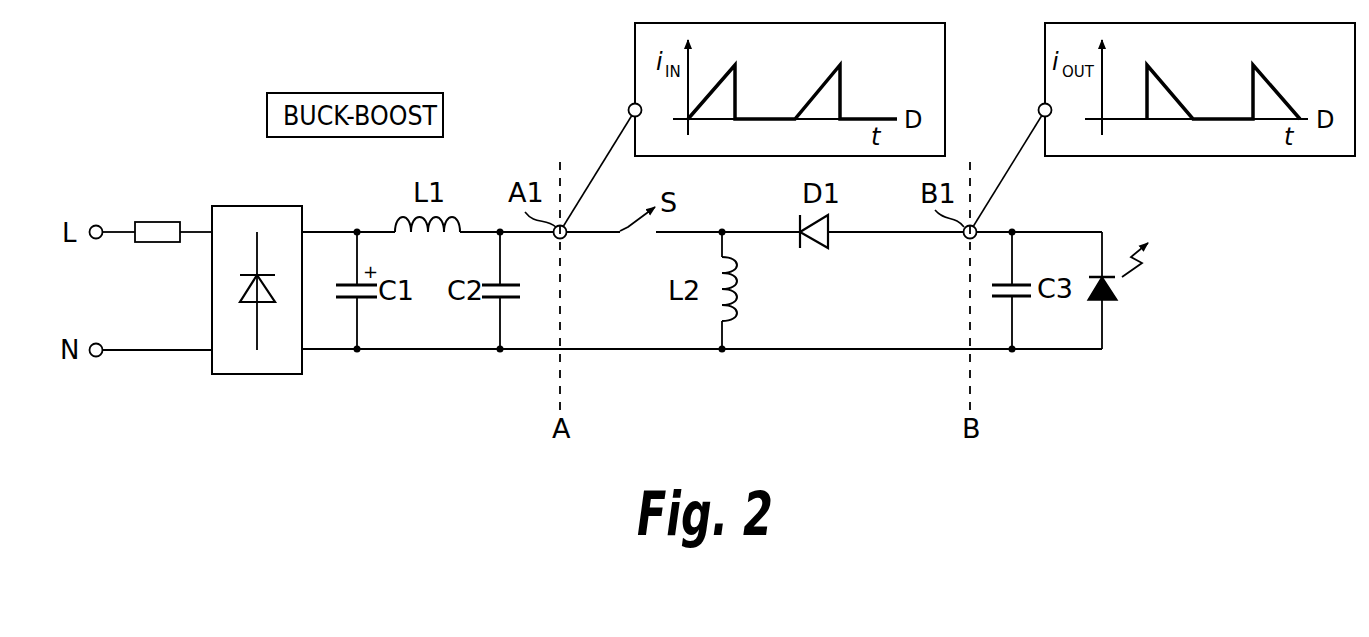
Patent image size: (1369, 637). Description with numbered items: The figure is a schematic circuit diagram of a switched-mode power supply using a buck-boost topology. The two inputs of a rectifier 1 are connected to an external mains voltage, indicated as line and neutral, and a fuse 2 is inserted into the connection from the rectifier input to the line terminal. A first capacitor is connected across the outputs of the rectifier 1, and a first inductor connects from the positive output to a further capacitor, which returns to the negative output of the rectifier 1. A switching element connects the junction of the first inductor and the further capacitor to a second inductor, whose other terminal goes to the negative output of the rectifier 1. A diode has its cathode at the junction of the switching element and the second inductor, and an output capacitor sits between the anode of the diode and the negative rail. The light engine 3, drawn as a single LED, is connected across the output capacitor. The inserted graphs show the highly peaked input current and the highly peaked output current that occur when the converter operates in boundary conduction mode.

The rectifier 1 is at (250, 375).
The fuse 2 is at (153, 222).
The light engine 3 is at (1143, 281).